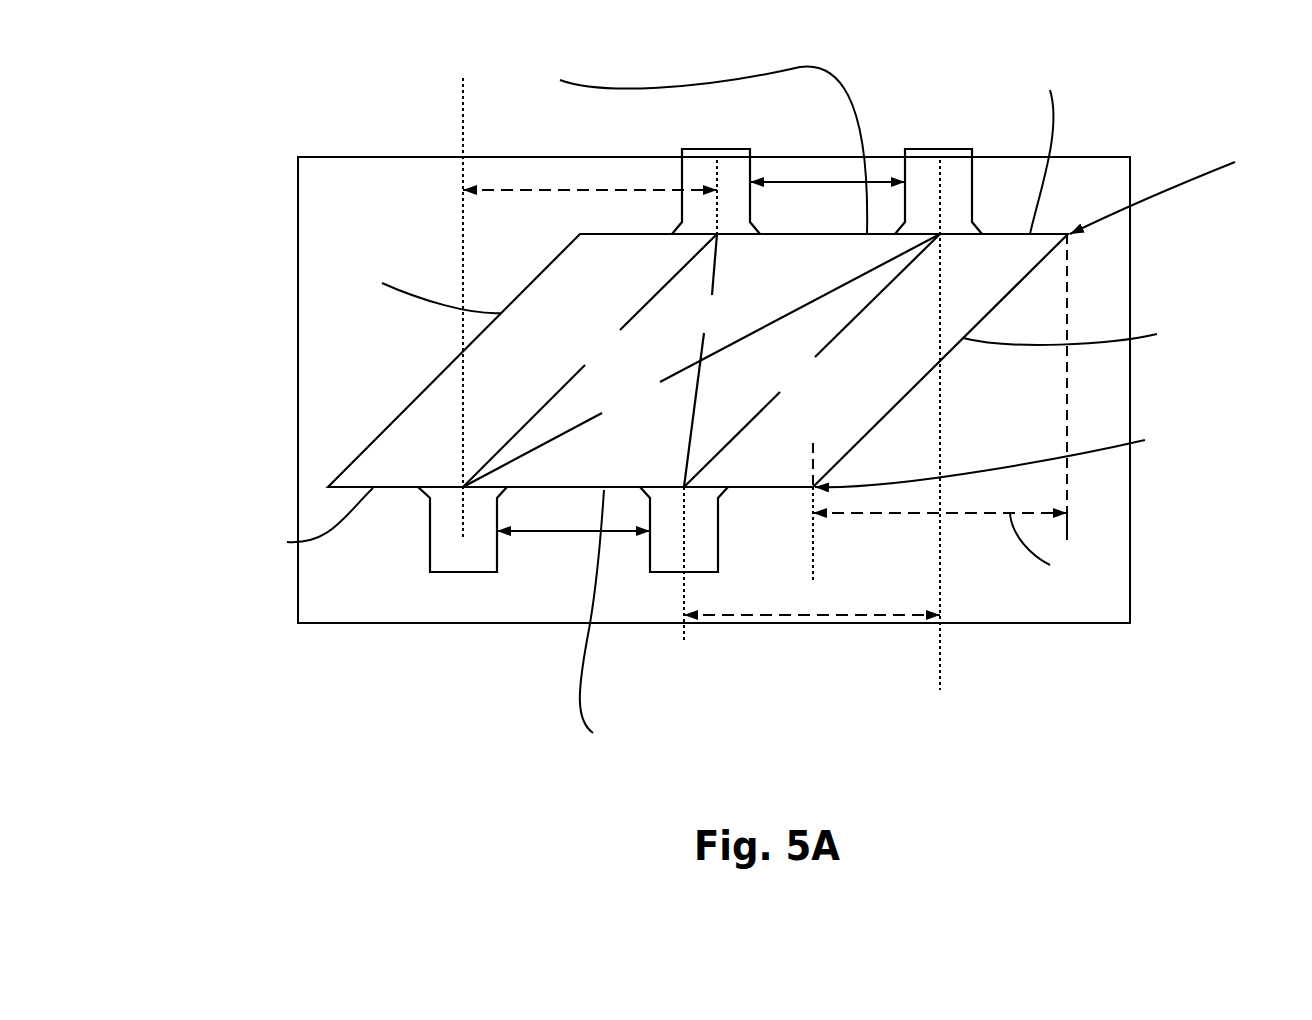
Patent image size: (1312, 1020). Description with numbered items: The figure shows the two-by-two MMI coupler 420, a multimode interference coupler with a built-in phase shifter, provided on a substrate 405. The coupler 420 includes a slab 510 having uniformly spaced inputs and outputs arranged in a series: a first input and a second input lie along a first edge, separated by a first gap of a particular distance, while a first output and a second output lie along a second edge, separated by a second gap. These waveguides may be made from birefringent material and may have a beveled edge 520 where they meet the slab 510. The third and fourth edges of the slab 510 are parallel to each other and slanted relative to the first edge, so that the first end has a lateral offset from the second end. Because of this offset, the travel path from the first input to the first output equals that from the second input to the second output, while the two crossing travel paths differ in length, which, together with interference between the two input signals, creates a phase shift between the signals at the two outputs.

The 2×2 MMI coupler 420 is at (315, 62).
The substrate 405 is at (365, 186).
The slab 510 is at (435, 430).
The beveled edge 520 is at (420, 490).